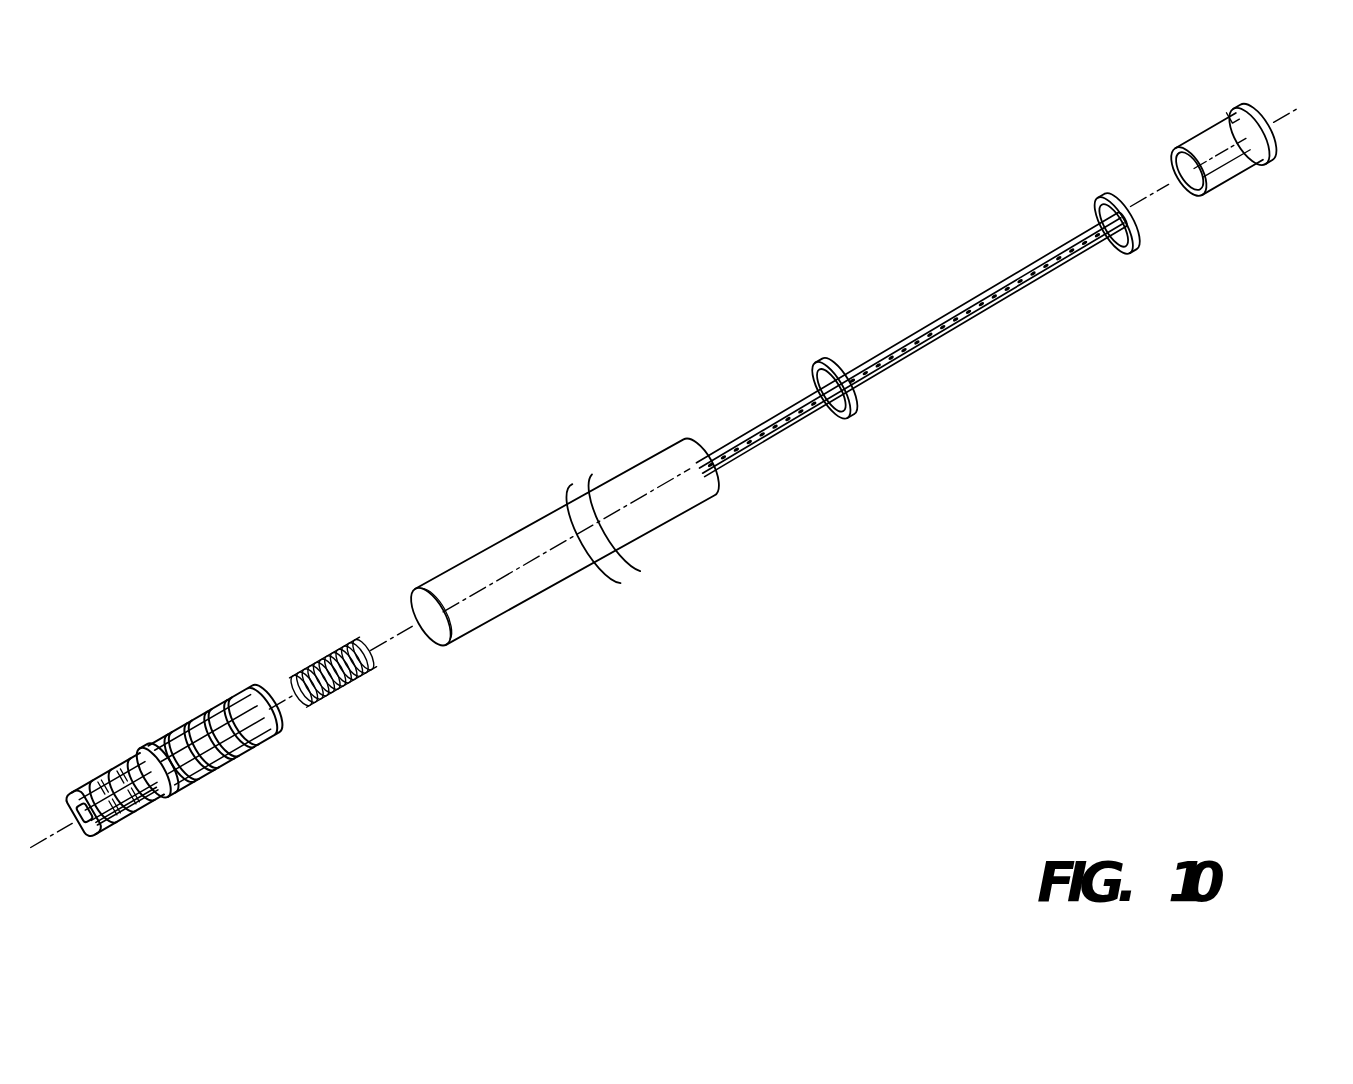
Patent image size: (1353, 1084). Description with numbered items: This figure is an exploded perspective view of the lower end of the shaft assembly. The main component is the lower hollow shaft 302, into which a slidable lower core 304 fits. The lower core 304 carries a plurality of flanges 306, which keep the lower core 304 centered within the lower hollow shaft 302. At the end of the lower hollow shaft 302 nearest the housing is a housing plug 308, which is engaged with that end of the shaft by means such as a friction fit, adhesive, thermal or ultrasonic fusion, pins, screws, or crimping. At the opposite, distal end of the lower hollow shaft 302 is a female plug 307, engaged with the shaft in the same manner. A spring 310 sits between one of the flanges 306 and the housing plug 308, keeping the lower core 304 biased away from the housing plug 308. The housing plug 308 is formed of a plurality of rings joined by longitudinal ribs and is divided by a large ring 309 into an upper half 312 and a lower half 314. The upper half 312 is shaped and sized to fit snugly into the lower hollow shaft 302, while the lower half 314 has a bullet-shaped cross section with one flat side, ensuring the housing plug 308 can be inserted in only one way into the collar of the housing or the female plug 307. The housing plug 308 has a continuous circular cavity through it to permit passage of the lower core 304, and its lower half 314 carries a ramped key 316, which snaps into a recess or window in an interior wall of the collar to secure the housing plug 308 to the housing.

The lower hollow shaft 302 is at (532, 585).
The lower core 304 is at (784, 455).
The flanges 306 is at (847, 406).
The female plug 307 is at (1243, 195).
The housing plug 308 is at (167, 794).
The large ring 309 is at (146, 742).
The spring 310 is at (346, 700).
The upper half 312 is at (214, 786).
The lower half 314 is at (76, 778).
The ramped key 316 is at (150, 815).